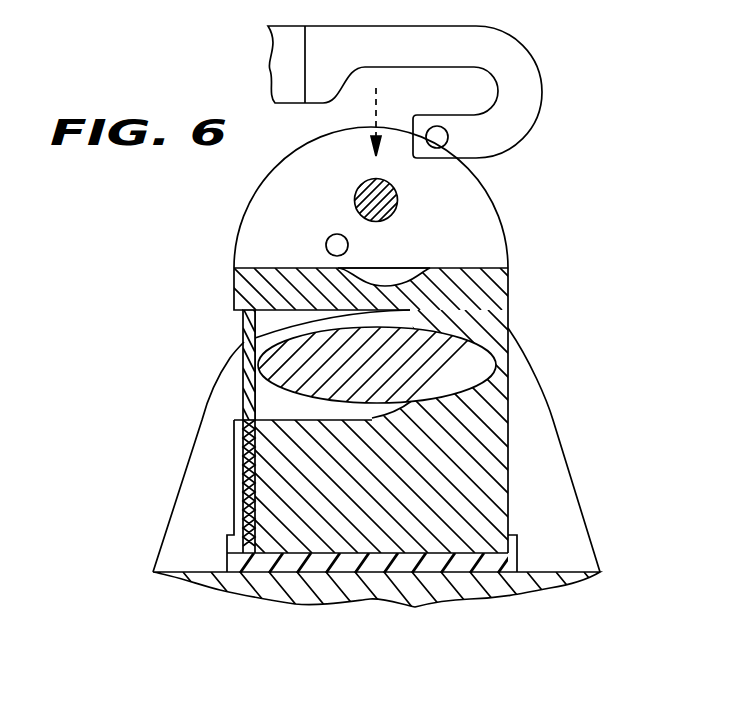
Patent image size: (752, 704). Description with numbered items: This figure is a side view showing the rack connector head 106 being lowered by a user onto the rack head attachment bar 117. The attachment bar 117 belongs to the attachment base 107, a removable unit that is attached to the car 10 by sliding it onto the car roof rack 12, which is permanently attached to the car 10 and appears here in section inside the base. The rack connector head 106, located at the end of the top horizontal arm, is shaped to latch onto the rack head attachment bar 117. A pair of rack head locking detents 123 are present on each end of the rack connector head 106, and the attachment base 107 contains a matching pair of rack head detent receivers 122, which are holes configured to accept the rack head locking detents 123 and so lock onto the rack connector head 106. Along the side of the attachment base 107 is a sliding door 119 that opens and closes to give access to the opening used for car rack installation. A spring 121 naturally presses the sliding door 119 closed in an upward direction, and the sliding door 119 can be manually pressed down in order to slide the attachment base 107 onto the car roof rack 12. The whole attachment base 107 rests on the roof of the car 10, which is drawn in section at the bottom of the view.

The rack connector head 106 is at (527, 91).
The rack head locking detent 123 is at (448, 137).
The rack head detent receiver 122 is at (326, 245).
The rack head attachment bar 117 is at (398, 200).
The sliding door 119 is at (240, 340).
The car roof rack 12 is at (433, 363).
The attachment base 107 is at (568, 388).
The spring 121 is at (243, 472).
The car 10 is at (523, 583).